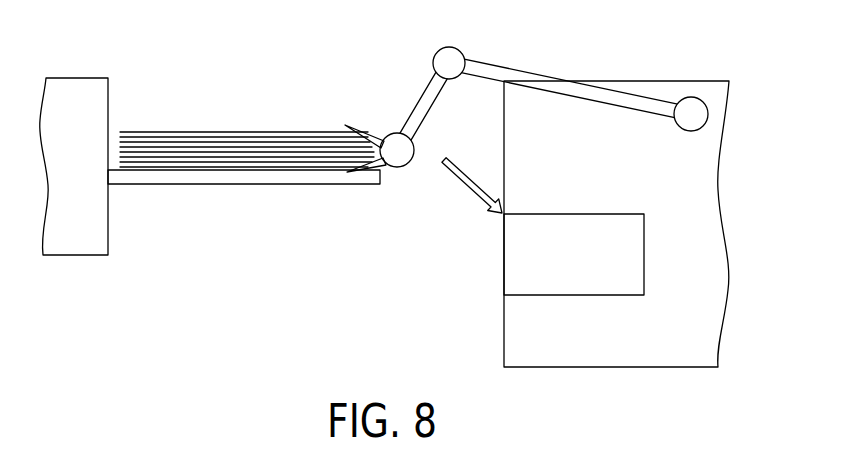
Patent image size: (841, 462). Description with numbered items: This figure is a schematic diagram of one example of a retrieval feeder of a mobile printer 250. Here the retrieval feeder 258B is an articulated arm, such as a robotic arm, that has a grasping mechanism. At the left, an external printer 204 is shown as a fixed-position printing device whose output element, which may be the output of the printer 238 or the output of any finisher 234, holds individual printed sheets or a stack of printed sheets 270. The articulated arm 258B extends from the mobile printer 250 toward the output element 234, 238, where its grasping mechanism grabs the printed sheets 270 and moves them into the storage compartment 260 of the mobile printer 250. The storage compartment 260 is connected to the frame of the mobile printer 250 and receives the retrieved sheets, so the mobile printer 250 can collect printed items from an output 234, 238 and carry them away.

The external printer 204 is at (70, 78).
The stack of printed sheets 270 is at (157, 118).
The finisher 234 is at (241, 203).
The printer output 238 is at (244, 227).
The articulated arm retrieval feeder 258B is at (393, 100).
The mobile printer 250 is at (682, 90).
The storage compartment 260 is at (576, 214).